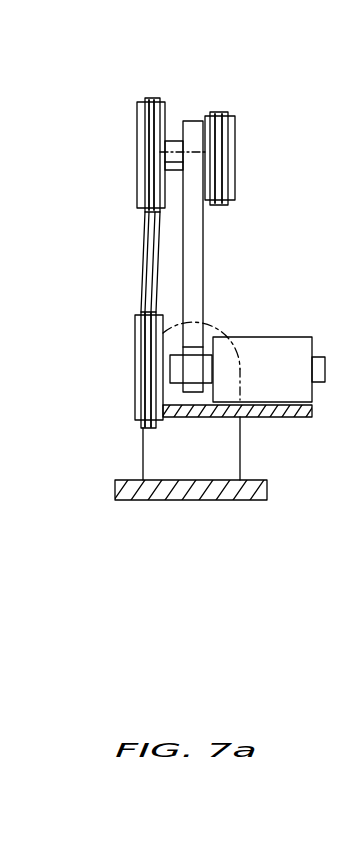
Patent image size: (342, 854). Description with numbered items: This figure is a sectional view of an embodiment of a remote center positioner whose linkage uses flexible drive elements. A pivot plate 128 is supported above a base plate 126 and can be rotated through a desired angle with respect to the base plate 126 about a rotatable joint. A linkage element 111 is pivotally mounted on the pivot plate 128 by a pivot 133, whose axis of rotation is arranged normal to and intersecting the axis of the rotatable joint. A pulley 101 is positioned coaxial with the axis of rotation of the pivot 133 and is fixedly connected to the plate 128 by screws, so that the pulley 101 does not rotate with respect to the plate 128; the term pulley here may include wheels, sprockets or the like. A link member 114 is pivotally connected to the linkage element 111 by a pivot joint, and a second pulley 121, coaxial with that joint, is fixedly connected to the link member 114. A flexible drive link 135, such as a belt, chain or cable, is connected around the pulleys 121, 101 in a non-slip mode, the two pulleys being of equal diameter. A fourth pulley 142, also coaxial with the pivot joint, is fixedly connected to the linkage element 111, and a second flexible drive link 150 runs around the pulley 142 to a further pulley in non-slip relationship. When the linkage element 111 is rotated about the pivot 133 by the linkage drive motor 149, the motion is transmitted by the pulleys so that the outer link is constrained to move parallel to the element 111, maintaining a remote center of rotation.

The pulley 101 is at (91, 367).
The linkage element 111 is at (231, 256).
The link member 114 is at (155, 105).
The second pulley 121 is at (86, 147).
The base plate 126 is at (176, 518).
The pivot plate 128 is at (176, 441).
The pivot 133 is at (227, 330).
The flexible drive link 135 is at (104, 262).
The fourth pulley 142 is at (259, 158).
The linkage drive motor 149 is at (273, 348).
The second flexible drive link 150 is at (257, 123).